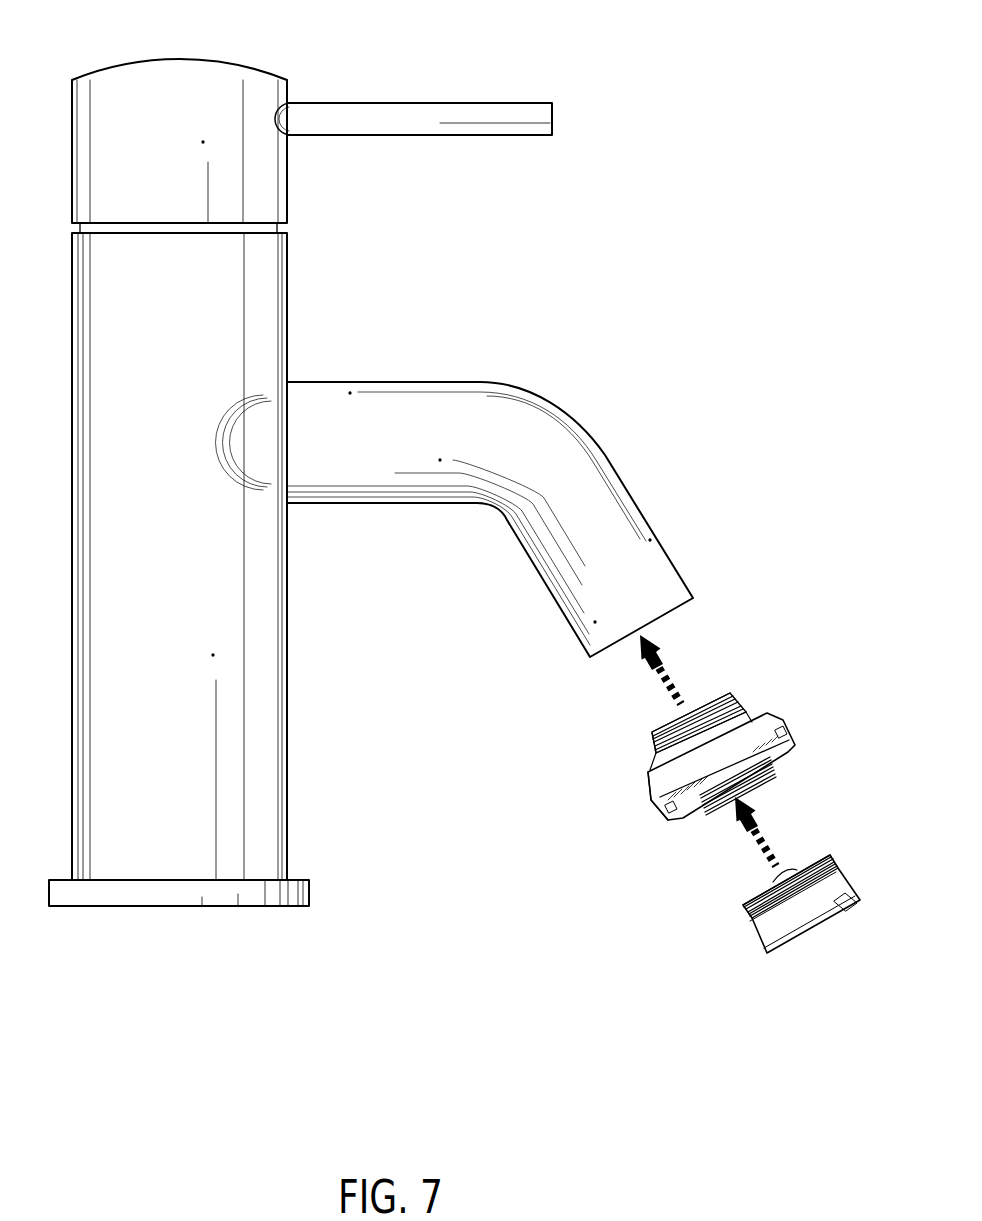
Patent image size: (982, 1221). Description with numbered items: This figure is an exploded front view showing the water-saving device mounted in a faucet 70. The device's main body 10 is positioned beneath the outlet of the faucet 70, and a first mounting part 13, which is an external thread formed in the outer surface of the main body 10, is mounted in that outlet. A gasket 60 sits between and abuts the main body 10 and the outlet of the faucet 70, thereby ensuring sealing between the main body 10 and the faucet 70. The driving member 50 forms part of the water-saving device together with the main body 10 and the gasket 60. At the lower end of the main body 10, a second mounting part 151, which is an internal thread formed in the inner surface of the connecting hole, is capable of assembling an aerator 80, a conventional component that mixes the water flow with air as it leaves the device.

The faucet 70 is at (513, 448).
The main body 10 is at (715, 740).
The gasket 60 is at (728, 692).
The first mounting part 13 is at (652, 741).
The driving member 50 is at (667, 787).
The second mounting part 151 is at (765, 773).
The aerator 80 is at (774, 923).